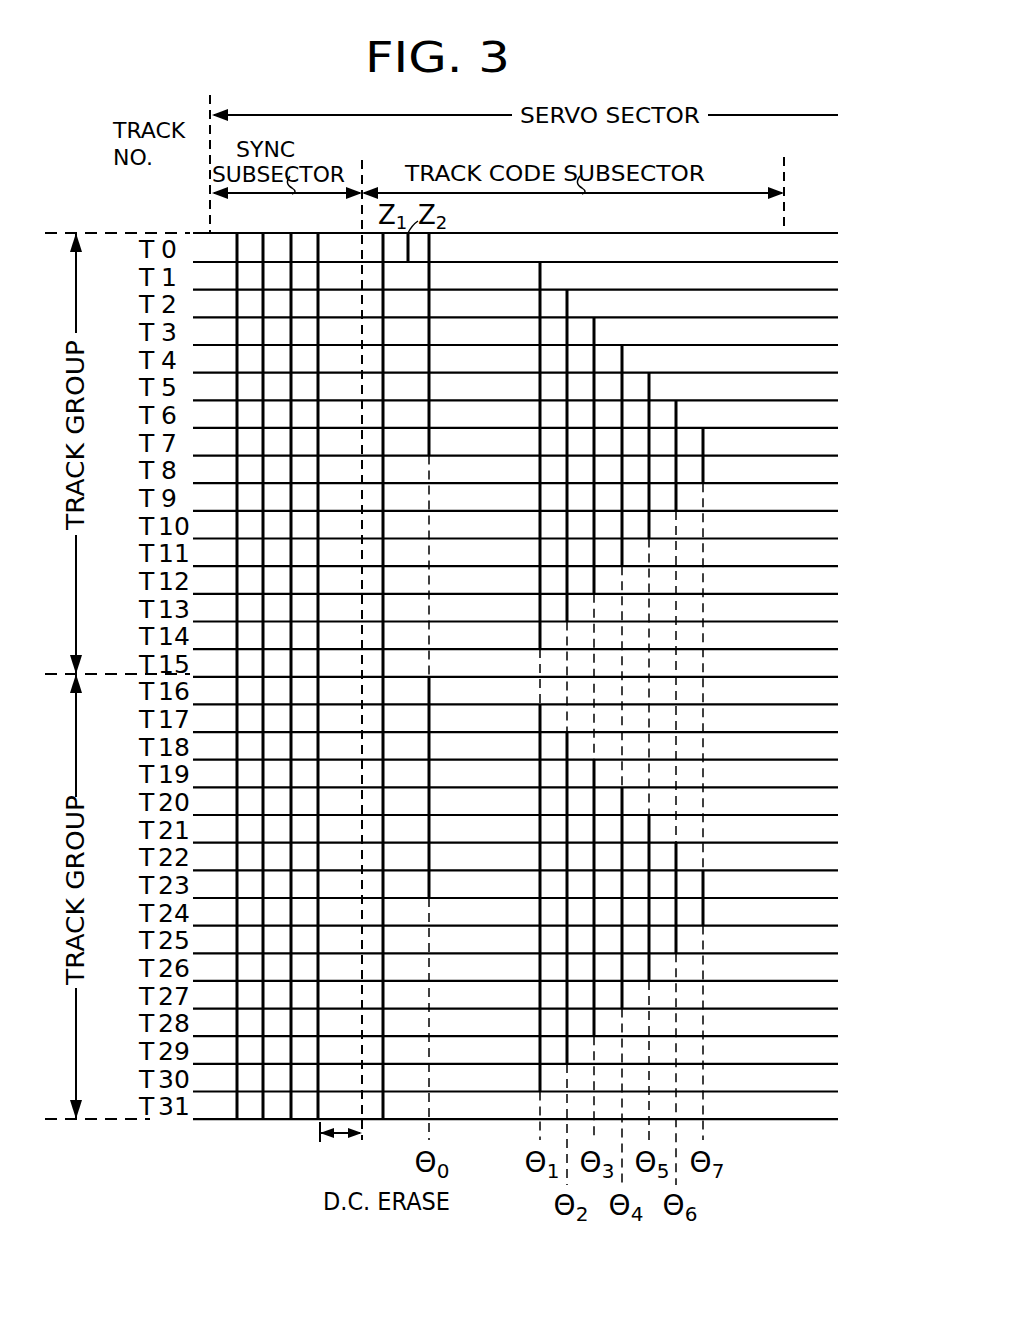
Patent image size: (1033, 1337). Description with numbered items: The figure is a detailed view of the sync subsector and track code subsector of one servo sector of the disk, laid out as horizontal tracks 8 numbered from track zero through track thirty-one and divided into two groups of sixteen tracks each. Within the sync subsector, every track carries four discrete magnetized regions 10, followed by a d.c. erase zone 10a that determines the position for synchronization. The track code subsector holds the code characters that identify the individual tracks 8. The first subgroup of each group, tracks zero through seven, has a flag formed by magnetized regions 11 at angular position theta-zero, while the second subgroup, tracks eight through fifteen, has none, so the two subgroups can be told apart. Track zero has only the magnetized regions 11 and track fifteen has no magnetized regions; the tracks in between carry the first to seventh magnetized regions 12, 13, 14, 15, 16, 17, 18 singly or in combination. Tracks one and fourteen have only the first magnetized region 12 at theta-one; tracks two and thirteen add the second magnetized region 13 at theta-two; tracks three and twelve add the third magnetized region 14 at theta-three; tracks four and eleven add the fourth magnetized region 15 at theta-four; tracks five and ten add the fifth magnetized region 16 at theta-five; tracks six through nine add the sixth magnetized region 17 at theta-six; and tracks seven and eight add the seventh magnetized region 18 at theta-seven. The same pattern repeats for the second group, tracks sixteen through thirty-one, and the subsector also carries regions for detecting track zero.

The tracks 8 is at (836, 262).
The discrete magnetized regions 10 is at (237, 1119).
The d.c. erase zone 10a is at (330, 1140).
The magnetized regions 11 is at (429, 440).
The first magnetized region 12 is at (540, 637).
The second magnetized region 13 is at (567, 609).
The third magnetized region 14 is at (594, 581).
The fourth magnetized region 15 is at (622, 553).
The fifth magnetized region 16 is at (649, 525).
The sixth magnetized region 17 is at (676, 497).
The seventh magnetized region 18 is at (703, 469).